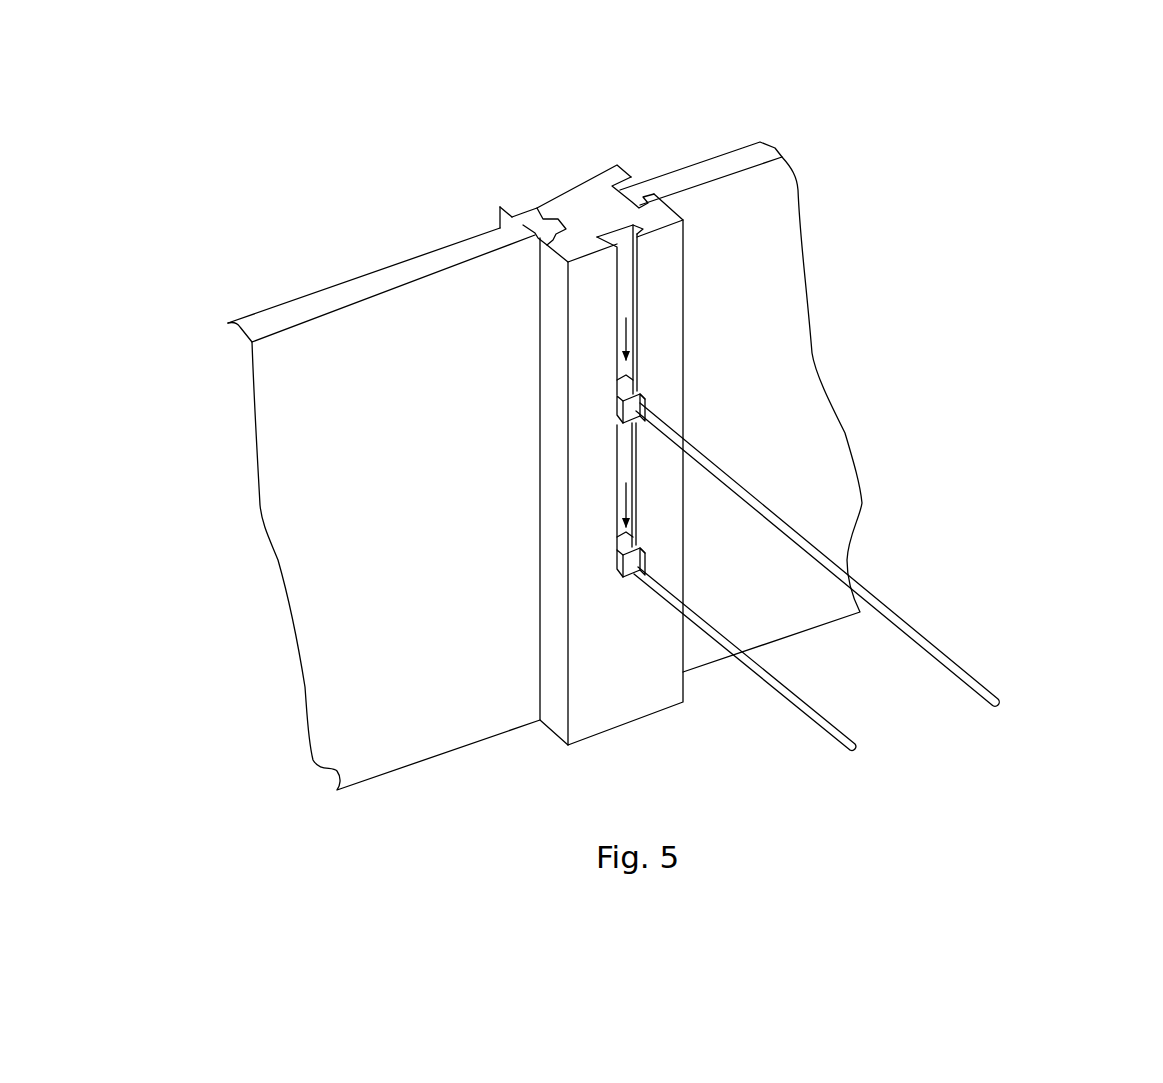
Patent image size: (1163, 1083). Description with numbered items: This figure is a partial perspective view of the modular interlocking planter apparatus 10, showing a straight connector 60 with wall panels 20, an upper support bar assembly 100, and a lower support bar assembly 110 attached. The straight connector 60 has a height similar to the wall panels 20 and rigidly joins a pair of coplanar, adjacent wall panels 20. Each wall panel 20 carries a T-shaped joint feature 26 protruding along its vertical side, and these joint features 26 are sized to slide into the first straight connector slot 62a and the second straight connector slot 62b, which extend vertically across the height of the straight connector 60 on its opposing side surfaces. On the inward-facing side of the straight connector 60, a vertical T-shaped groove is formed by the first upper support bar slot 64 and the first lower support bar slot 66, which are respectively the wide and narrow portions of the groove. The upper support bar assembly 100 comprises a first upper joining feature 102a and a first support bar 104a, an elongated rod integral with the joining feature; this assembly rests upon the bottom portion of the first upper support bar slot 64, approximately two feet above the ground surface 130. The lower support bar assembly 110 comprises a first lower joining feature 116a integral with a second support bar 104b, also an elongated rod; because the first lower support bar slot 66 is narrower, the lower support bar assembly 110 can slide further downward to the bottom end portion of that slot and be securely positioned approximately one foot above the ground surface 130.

The apparatus 10 is at (997, 163).
The wall panel 20 is at (280, 310).
The joint feature 26 is at (525, 227).
The straight connector 60 is at (565, 192).
The first straight connector slot 62a is at (615, 185).
The second straight connector slot 62b is at (532, 217).
The first upper support bar slot 64 is at (633, 289).
The first lower support bar slot 66 is at (620, 448).
The upper support bar assembly 100 is at (1034, 692).
The first upper joining feature 102a is at (637, 387).
The first support bar 104a is at (865, 597).
The second support bar 104b is at (790, 703).
The lower support bar assembly 110 is at (871, 749).
The first lower joining feature 116a is at (640, 564).
The ground surface 130 is at (982, 617).